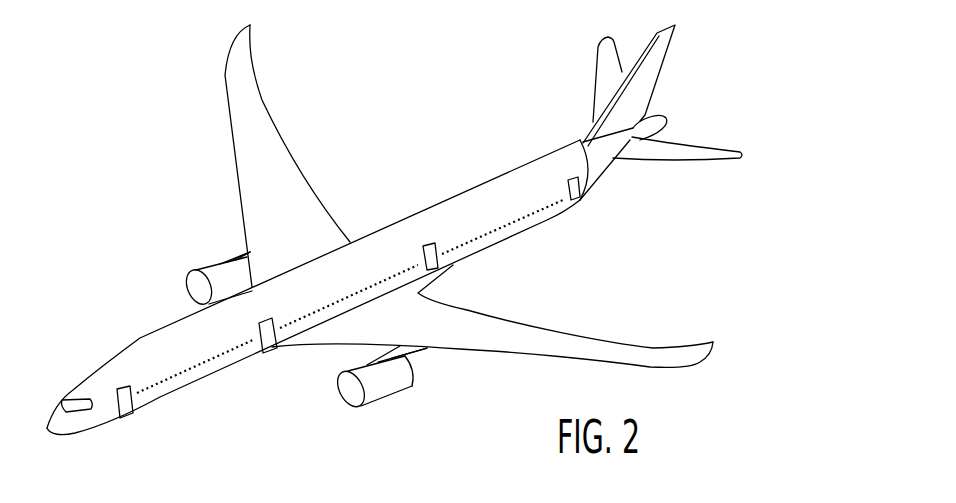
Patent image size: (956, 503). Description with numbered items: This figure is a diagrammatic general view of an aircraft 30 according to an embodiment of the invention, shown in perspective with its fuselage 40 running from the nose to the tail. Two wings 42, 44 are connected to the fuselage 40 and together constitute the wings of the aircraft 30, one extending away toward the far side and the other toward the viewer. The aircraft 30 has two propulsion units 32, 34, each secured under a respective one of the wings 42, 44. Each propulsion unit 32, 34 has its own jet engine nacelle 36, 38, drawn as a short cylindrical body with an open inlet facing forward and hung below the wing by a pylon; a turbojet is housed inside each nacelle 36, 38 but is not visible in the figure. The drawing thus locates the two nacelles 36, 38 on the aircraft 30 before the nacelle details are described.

The aircraft 30 is at (254, 400).
The propulsion unit 32 is at (192, 267).
The propulsion unit 34 is at (383, 402).
The jet engine nacelle 36 is at (186, 293).
The jet engine nacelle 38 is at (343, 398).
The fuselage 40 is at (496, 190).
The wing 42 is at (287, 180).
The wing 44 is at (563, 340).